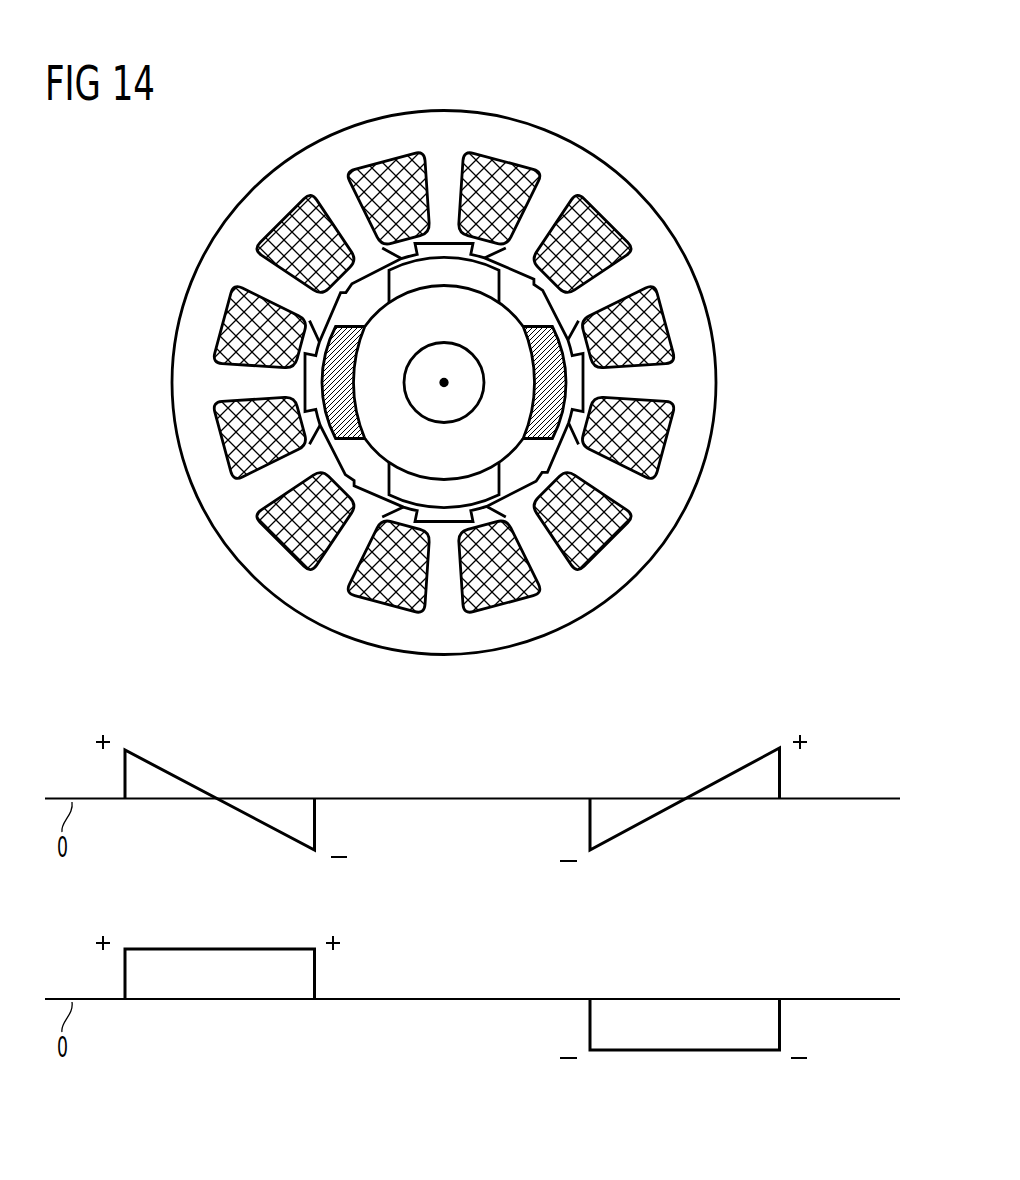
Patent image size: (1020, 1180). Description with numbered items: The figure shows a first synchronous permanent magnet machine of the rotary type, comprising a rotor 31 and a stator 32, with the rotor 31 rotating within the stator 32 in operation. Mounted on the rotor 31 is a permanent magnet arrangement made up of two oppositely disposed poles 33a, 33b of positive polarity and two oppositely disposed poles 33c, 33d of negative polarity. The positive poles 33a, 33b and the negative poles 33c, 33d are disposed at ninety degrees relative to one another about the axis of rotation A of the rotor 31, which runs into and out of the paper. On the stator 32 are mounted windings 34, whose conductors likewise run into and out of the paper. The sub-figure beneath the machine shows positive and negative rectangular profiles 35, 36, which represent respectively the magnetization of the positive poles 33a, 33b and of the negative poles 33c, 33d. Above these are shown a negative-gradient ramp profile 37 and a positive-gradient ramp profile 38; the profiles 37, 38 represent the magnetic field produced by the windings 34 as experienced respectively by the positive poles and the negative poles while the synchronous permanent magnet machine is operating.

The rotor 31 is at (408, 435).
The stator 32 is at (652, 219).
The pole of positive polarity 33a is at (444, 280).
The pole of positive polarity 33b is at (444, 490).
The pole of negative polarity 33c is at (338, 385).
The pole of negative polarity 33d is at (548, 383).
The windings 34 is at (665, 323).
The positive rectangular profile 35 is at (223, 948).
The negative rectangular profile 36 is at (680, 1052).
The negative-gradient ramp profile 37 is at (179, 773).
The positive-gradient ramp profile 38 is at (733, 770).
The axis of rotation A is at (448, 380).